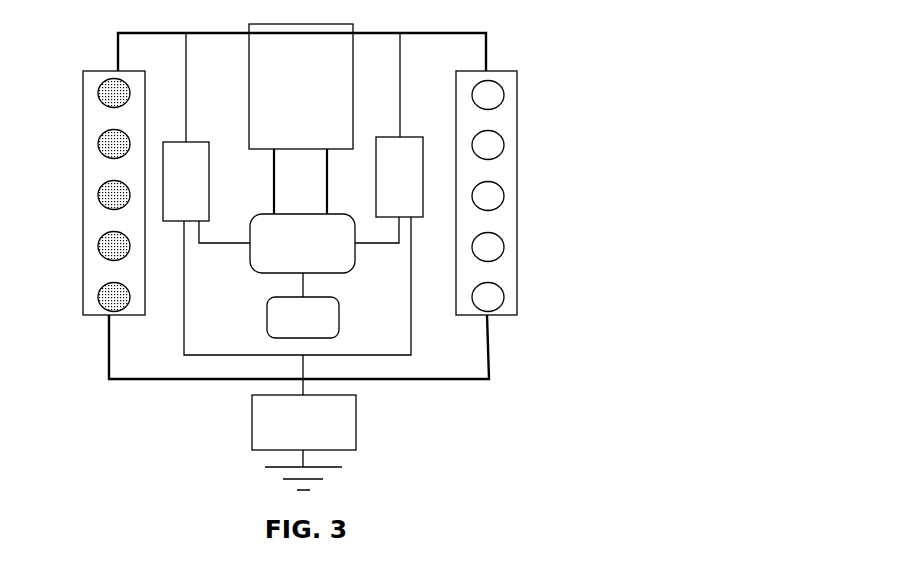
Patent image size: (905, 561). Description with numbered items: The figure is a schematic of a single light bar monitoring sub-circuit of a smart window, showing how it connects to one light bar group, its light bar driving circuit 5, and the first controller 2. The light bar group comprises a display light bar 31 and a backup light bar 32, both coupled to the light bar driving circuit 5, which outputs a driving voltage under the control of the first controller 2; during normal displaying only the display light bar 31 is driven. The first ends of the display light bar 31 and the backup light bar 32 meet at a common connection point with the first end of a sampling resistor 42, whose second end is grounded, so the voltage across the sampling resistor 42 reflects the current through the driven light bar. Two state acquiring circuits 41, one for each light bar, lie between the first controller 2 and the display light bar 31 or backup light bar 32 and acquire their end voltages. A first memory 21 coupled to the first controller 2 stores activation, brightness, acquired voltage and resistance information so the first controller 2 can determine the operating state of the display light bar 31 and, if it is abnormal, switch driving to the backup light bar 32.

The light bar driving circuit 5 is at (301, 86).
The first controller 2 is at (302, 243).
The first memory 21 is at (303, 305).
The state acquiring circuit 41 is at (293, 179).
The sampling resistor 42 is at (304, 442).
The display light bar 31 is at (519, 117).
The backup light bar 32 is at (85, 97).